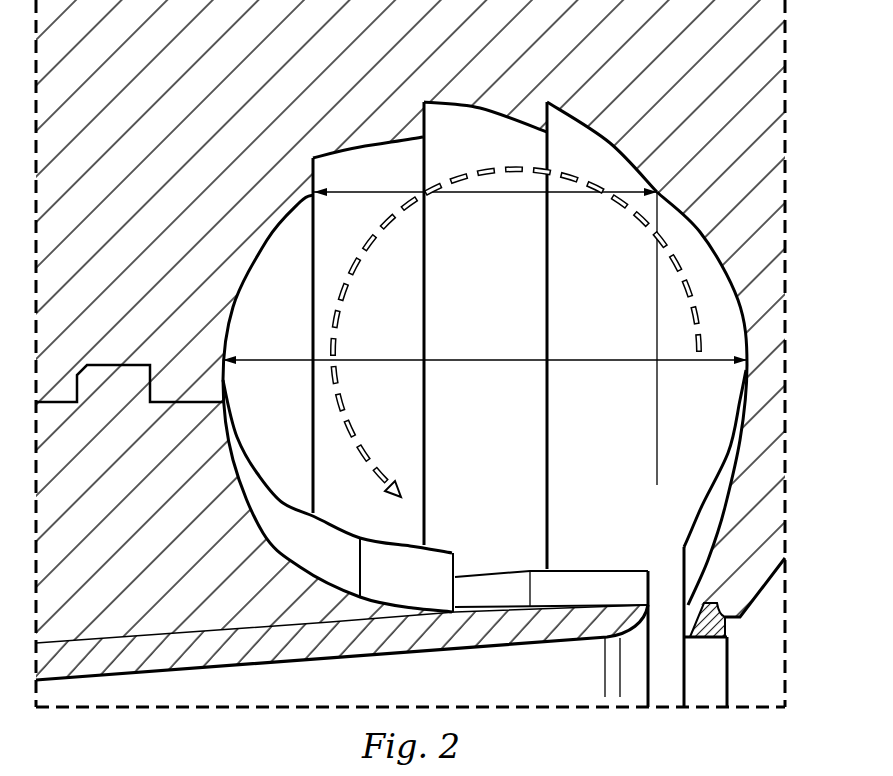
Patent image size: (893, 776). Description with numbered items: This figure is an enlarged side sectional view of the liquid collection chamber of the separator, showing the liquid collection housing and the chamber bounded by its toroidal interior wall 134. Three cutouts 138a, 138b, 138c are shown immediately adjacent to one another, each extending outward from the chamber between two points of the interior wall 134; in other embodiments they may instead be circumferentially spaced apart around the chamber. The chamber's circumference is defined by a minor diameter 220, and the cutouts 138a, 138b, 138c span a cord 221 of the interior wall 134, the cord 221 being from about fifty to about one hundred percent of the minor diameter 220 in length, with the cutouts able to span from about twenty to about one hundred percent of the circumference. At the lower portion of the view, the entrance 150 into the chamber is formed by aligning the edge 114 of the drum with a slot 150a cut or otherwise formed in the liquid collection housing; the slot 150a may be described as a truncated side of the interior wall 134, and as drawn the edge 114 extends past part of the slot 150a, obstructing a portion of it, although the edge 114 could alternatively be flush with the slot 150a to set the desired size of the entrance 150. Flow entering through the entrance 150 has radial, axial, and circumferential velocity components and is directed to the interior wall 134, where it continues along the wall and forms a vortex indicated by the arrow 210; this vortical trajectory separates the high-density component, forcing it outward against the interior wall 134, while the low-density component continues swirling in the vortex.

The edge 114 is at (648, 575).
The interior wall 134 is at (728, 467).
The cutout 138a is at (352, 168).
The cutout 138b is at (440, 120).
The cutout 138c is at (564, 132).
The entrance 150 is at (670, 550).
The slot 150a is at (490, 540).
The arrow 210 is at (340, 332).
The minor diameter 220 is at (482, 362).
The cord 221 is at (508, 200).